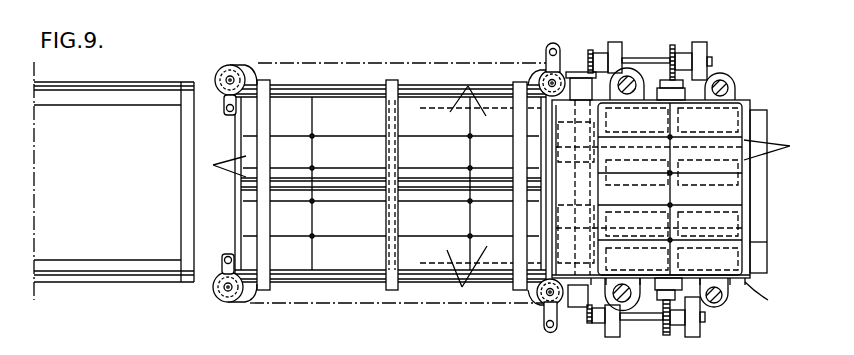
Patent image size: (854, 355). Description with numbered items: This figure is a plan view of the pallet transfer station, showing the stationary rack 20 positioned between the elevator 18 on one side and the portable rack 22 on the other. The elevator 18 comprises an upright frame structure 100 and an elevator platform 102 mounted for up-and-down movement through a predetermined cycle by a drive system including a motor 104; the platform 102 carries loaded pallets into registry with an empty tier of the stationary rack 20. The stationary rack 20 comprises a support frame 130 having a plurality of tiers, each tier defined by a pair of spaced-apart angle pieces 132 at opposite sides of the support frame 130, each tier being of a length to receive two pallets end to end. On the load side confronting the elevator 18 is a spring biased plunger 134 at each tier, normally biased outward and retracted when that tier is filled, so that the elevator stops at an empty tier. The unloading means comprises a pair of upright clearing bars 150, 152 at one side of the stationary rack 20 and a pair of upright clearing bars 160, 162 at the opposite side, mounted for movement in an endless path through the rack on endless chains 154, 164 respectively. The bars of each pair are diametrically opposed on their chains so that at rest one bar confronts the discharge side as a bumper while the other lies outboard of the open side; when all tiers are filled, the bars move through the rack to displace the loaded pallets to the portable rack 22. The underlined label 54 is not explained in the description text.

The elevator 18 is at (557, 182).
The stationary rack 20 is at (381, 180).
The portable rack 22 is at (157, 78).
The support bracket 54 is at (786, 309).
The upright frame structure 100 is at (720, 305).
The elevator platform 102 is at (767, 259).
The motor 104 is at (654, 166).
The support frame 130 is at (268, 290).
The angle pieces 132 is at (308, 88).
The spring biased plunger 134 is at (567, 71).
The clearing bar 150 is at (543, 326).
The clearing bar 152 is at (226, 255).
The endless chain 154 is at (414, 304).
The clearing bar 160 is at (551, 45).
The clearing bar 162 is at (228, 113).
The endless chain 164 is at (412, 52).